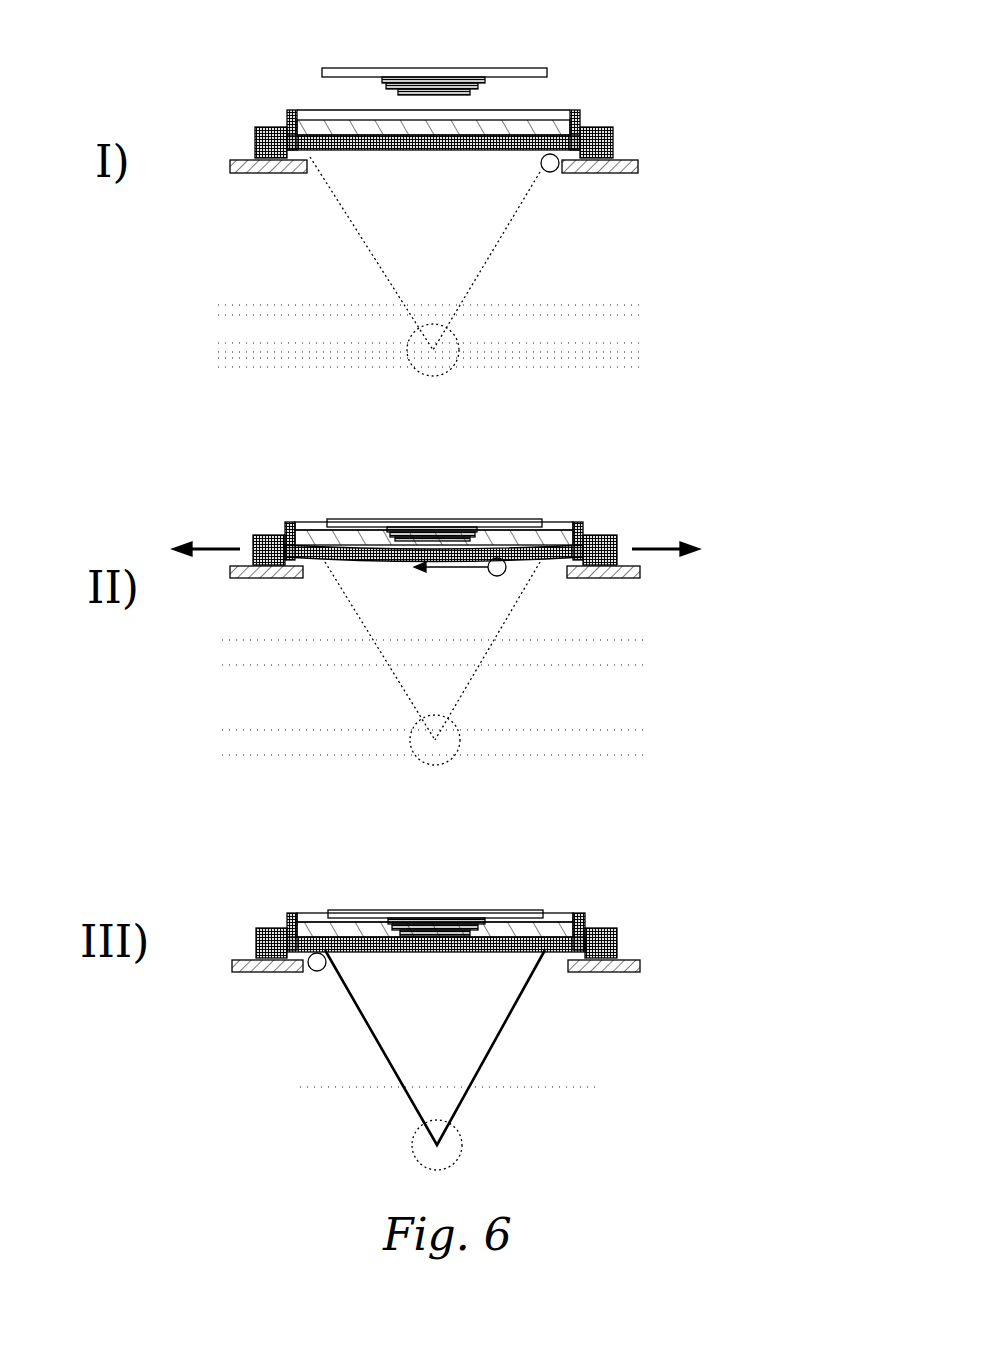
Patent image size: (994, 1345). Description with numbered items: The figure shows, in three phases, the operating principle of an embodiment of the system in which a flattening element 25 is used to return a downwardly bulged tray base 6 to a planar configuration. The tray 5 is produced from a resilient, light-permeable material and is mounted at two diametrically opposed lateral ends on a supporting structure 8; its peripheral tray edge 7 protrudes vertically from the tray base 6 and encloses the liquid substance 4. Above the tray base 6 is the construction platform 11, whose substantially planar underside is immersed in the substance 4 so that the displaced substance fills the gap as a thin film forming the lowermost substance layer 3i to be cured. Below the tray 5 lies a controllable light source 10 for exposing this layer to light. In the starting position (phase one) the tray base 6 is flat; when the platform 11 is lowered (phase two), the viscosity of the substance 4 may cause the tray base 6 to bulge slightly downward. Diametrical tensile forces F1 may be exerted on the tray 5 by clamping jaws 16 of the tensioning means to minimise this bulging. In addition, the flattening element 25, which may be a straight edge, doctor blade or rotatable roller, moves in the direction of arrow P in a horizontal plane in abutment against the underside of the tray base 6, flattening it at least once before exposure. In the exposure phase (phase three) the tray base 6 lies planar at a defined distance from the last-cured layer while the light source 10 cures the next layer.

The lowermost substance layer to be cured 3i is at (400, 530).
The liquid substance 4 is at (330, 128).
The tray 5 is at (660, 82).
The tray base 6 is at (388, 150).
The tray edge 7 is at (575, 110).
The supporting structure 8 is at (255, 140).
The controllable light source 10 is at (450, 344).
The construction platform 11 is at (522, 72).
The clamping jaw 16 is at (230, 167).
The flattening element 25 is at (541, 166).
The direction of movement of flattening element P is at (455, 572).
The diametrical tensile forces F1 is at (436, 538).